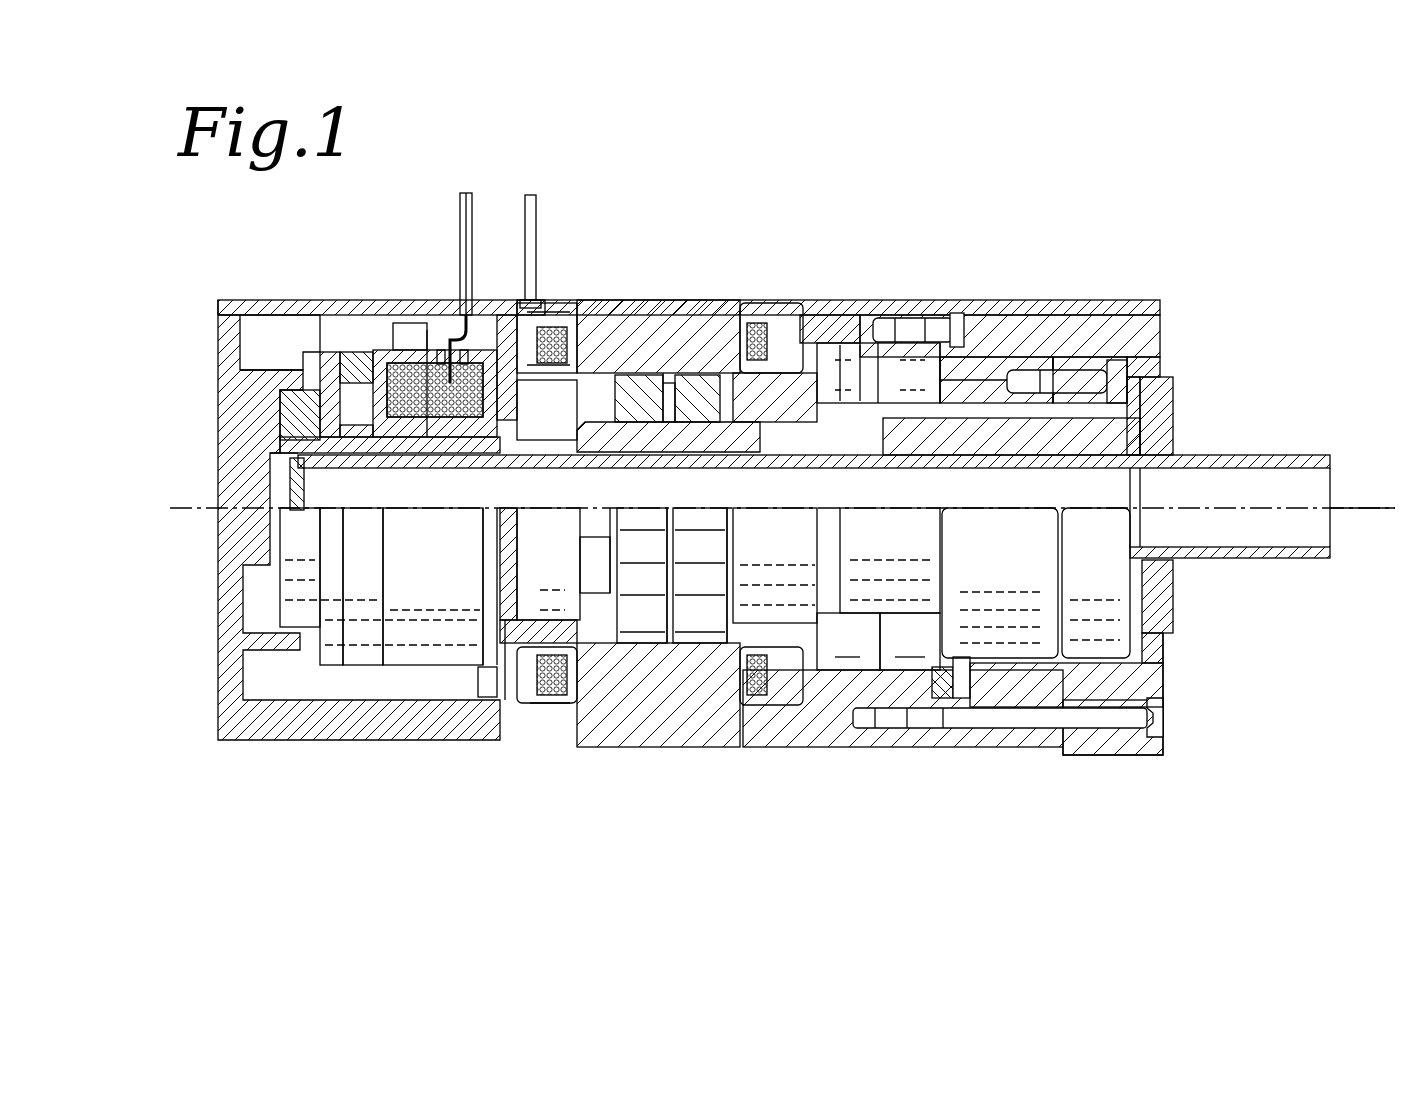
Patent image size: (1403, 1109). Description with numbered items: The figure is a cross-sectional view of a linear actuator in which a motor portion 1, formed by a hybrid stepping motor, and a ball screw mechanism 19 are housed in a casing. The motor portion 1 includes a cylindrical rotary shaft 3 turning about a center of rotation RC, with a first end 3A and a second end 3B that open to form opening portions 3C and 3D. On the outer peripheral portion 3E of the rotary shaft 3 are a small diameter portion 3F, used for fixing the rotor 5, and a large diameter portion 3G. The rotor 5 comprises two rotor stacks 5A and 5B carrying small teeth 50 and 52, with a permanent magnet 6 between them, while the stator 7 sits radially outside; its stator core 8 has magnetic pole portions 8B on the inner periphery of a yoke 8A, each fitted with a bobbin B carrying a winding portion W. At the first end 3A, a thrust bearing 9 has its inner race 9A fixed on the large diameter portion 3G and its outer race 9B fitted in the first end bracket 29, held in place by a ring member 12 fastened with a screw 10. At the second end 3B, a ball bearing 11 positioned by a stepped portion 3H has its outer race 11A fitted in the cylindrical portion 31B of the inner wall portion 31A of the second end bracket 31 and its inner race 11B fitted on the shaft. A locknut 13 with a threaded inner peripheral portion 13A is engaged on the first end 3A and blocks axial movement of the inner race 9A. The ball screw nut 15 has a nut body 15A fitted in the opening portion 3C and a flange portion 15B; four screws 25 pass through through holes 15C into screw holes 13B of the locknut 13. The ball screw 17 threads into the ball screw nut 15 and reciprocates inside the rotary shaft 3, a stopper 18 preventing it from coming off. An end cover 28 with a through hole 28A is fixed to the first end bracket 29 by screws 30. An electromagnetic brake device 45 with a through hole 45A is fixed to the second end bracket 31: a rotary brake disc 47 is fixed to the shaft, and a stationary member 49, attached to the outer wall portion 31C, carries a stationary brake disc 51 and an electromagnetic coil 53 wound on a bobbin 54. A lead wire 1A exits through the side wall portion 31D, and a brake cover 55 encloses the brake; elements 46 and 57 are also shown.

The motor portion 1 is at (711, 296).
The lead wire 1A is at (528, 195).
The rotary shaft 3 is at (802, 300).
The first end 3A is at (972, 418).
The second end 3B is at (392, 452).
The opening portion 3C is at (1173, 430).
The opening portion 3D is at (270, 463).
The outer peripheral portion 3E is at (613, 297).
The small diameter portion 3F is at (652, 297).
The large diameter portion 3G is at (1020, 300).
The stepped portion 3H is at (582, 370).
The rotor 5 is at (637, 300).
The rotor stack 5A is at (712, 620).
The rotor stack 5B is at (675, 690).
The permanent magnet 6 is at (672, 300).
The stator 7 is at (693, 296).
The stator core 8 is at (642, 640).
The yoke 8A is at (600, 640).
The magnetic pole portion 8B is at (628, 640).
The thrust bearing 9 is at (885, 300).
The inner race 9A is at (858, 300).
The outer race 9B is at (840, 300).
The screw 10 is at (957, 300).
The ball bearing 11 is at (588, 300).
The outer race 11A is at (555, 300).
The inner race 11B is at (568, 300).
The ring member 12 is at (940, 300).
The locknut 13 is at (993, 300).
The inner peripheral portion 13A is at (975, 300).
The screw hole 13B is at (1063, 300).
The ball screw nut 15 is at (1103, 645).
The nut body 15A is at (912, 500).
The flange portion 15B is at (1145, 300).
The through hole 15C is at (1110, 300).
The ball screw 17 is at (1288, 456).
The stopper 18 is at (290, 493).
The ball screw mechanism 19 is at (1142, 523).
The screw 25 is at (1117, 378).
The end cover 28 is at (1165, 655).
The through hole 28A is at (1173, 562).
The first end bracket 29 is at (818, 300).
The screw 30 is at (1163, 720).
The second end bracket 31 is at (512, 600).
The inner wall portion 31A is at (505, 650).
The cylindrical portion 31B is at (545, 745).
The outer wall portion 31C is at (485, 697).
The side wall portion 31D is at (518, 297).
The electromagnetic brake device 45 is at (395, 322).
The through hole 45A is at (430, 440).
The lead wire 46 is at (460, 200).
The rotary brake disc 47 is at (308, 300).
The stationary member 49 is at (415, 322).
The small teeth 50 is at (708, 640).
The stationary brake disc 51 is at (352, 352).
The small teeth 52 is at (655, 650).
The electromagnetic coil 53 is at (437, 322).
The bobbin 54 is at (385, 395).
The brake cover 55 is at (222, 327).
The ring 57 is at (300, 410).
The bobbin B is at (750, 300).
The winding portion W is at (772, 300).
The center of rotation RC is at (1362, 505).